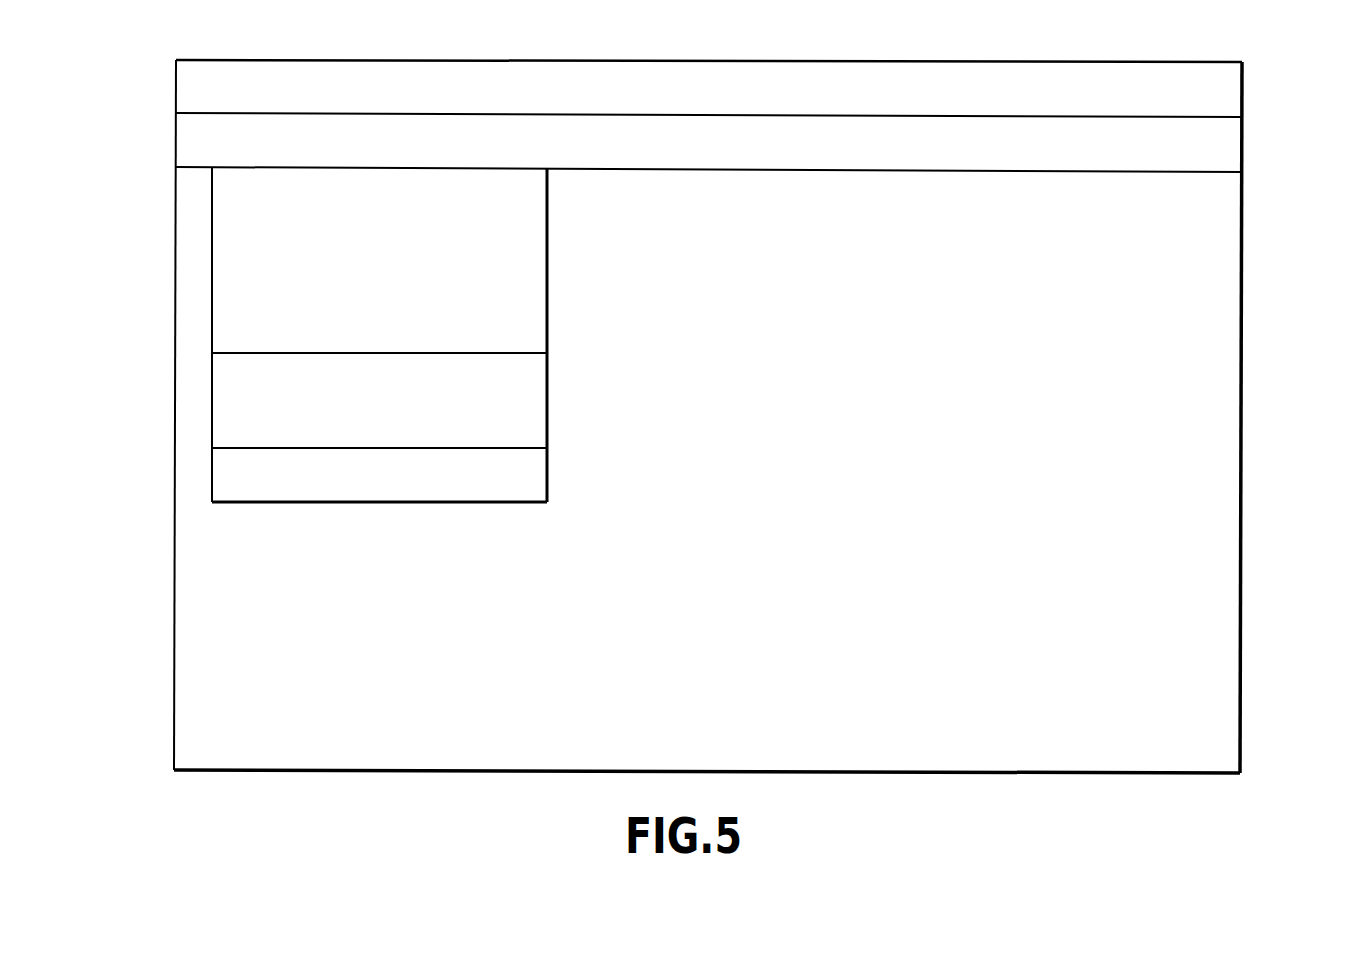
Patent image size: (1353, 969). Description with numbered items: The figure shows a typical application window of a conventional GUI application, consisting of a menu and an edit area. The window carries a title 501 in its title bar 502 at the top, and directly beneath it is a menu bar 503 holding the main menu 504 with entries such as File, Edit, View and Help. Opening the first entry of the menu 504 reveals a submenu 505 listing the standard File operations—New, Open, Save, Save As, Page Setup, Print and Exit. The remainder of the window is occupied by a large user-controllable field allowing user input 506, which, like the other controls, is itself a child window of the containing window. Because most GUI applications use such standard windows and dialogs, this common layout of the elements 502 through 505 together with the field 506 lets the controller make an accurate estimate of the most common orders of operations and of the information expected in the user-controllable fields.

The title 501 is at (1082, 60).
The title bar 502 is at (193, 85).
The menu bar 503 is at (193, 138).
The menu 504 is at (368, 112).
The submenu 505 is at (223, 262).
The user input field 506 is at (1224, 282).